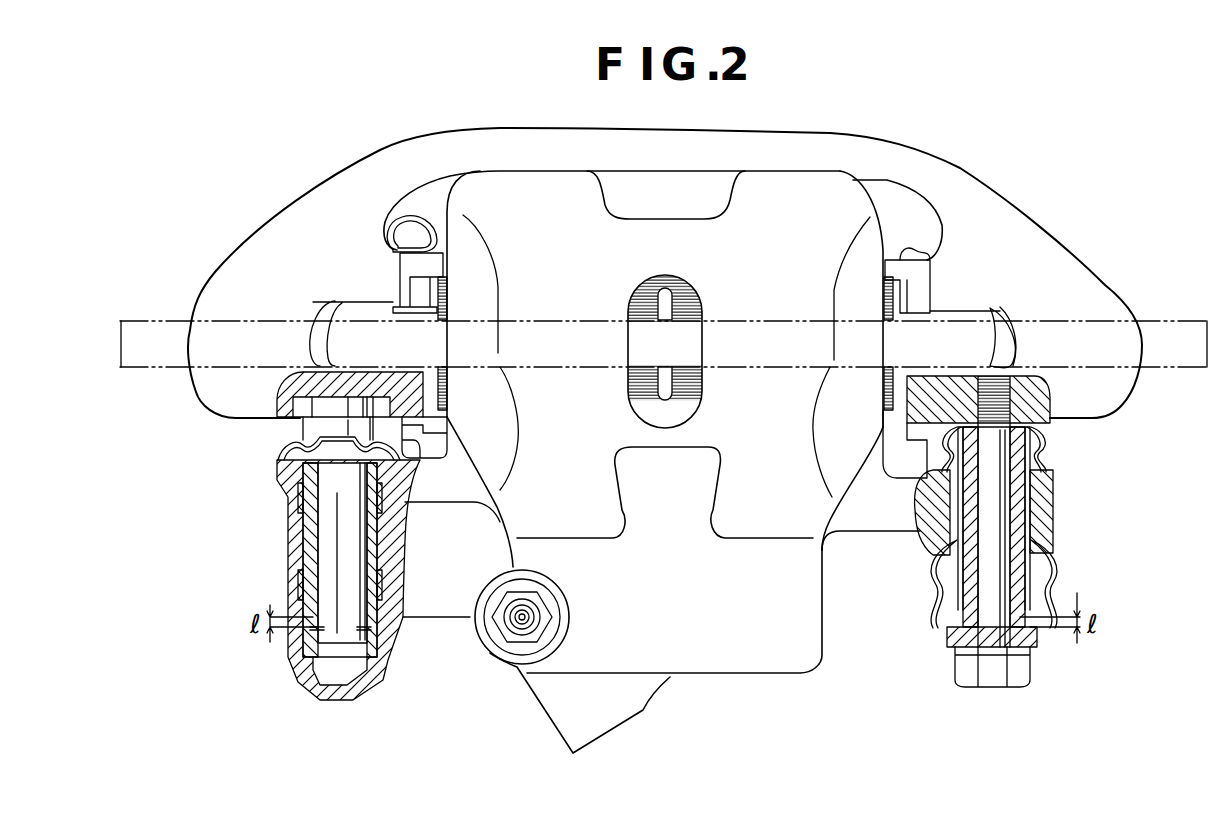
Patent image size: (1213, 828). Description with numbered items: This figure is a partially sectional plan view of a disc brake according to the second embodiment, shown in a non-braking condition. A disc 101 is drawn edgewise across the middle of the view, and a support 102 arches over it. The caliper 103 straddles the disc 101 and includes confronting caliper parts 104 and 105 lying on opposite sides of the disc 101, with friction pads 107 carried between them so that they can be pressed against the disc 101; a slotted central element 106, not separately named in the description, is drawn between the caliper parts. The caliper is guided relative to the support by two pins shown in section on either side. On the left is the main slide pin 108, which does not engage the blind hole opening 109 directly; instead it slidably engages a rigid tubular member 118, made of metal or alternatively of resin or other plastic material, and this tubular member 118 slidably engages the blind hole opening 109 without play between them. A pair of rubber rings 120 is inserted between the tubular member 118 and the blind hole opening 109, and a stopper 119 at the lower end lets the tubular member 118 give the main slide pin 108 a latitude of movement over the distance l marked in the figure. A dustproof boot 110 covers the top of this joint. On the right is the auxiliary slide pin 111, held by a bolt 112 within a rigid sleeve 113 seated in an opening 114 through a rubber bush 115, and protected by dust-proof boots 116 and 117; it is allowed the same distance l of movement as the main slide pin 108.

The disc 101 is at (1160, 340).
The support 102 is at (1005, 215).
The caliper 103 is at (813, 665).
The caliper part 104 is at (755, 660).
The caliper part 105 is at (795, 190).
The boss with slot 106 is at (693, 393).
The friction pads 107 is at (680, 293).
The main slide pin 108 is at (330, 540).
The blind hole opening 109 is at (373, 543).
The dustproof boot 110 is at (292, 441).
The auxiliary slide pin 111 is at (1028, 640).
The bolt 112 is at (993, 457).
The rigid sleeve 113 is at (1052, 503).
The opening 114 is at (1030, 545).
The rubber bush 115 is at (955, 525).
The dust-proof boot 116 is at (1045, 458).
The dust-proof boot 117 is at (1055, 580).
The tubular member 118 is at (307, 475).
The stopper 119 is at (312, 637).
The rubber rings 120 is at (297, 497).